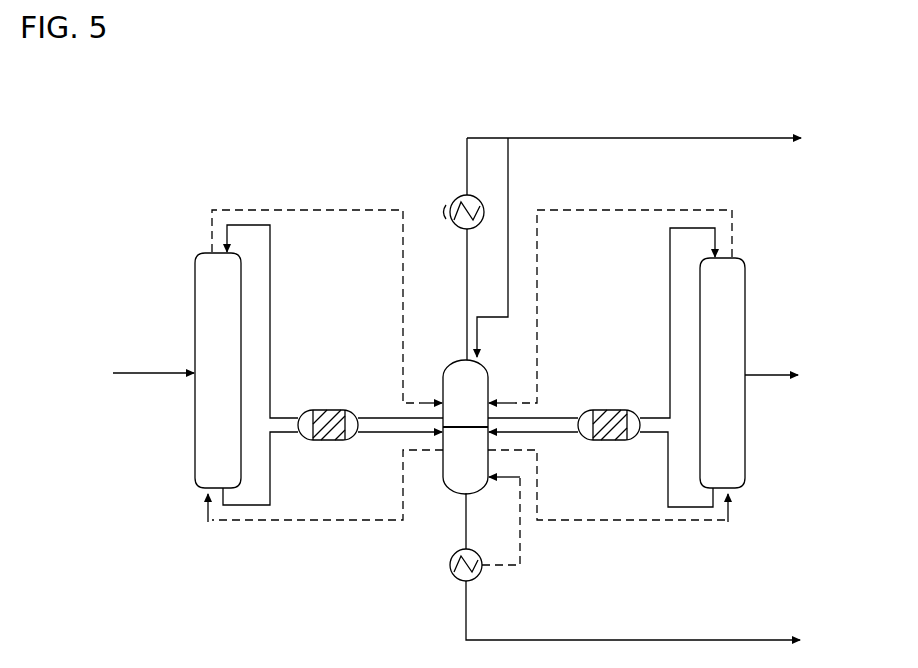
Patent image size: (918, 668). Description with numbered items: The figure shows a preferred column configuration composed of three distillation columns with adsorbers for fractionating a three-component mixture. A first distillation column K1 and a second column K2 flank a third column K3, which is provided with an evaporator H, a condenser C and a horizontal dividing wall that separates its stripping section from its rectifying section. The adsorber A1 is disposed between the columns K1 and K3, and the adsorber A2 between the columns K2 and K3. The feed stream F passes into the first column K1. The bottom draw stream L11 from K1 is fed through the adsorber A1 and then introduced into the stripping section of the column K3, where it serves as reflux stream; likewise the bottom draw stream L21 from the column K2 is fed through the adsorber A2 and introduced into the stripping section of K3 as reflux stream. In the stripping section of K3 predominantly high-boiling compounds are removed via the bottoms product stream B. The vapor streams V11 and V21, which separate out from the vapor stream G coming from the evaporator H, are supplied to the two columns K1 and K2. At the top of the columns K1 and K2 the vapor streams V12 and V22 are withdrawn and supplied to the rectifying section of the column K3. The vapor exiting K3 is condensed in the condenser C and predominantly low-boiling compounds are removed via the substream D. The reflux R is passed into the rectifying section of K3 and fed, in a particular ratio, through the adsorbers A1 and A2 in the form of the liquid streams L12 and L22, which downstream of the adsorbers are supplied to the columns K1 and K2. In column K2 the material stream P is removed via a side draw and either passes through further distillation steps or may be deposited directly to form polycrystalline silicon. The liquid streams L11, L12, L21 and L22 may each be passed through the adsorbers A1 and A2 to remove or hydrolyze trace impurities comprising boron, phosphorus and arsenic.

The first distillation column K1 is at (218, 370).
The second column K2 is at (722, 373).
The third column K3 is at (465, 427).
The adsorber A1 is at (328, 415).
The adsorber A2 is at (609, 415).
The vapor stream V11 is at (325, 499).
The vapor stream V12 is at (327, 293).
The vapor stream V21 is at (608, 499).
The vapor stream V22 is at (610, 293).
The bottom draw stream L11 is at (332, 468).
The liquid stream L12 is at (335, 321).
The bottom draw stream L21 is at (601, 469).
The liquid stream L22 is at (601, 323).
The condenser C is at (451, 249).
The evaporator H is at (454, 537).
The vapor stream G is at (501, 521).
The reflux R is at (504, 247).
The feed stream F is at (153, 361).
The material stream P is at (783, 376).
The substream D is at (644, 140).
The bottoms product stream B is at (644, 614).